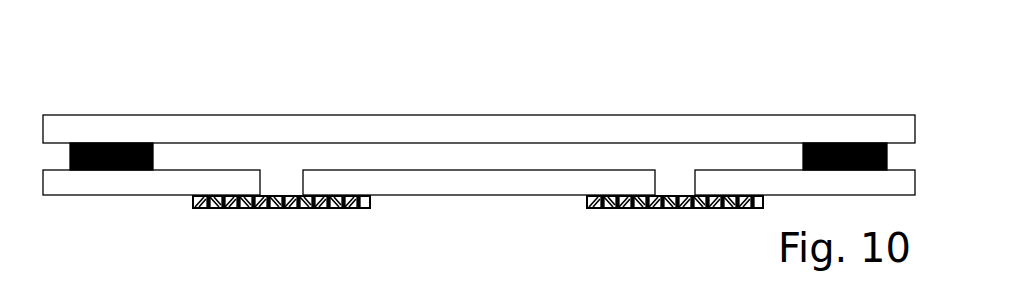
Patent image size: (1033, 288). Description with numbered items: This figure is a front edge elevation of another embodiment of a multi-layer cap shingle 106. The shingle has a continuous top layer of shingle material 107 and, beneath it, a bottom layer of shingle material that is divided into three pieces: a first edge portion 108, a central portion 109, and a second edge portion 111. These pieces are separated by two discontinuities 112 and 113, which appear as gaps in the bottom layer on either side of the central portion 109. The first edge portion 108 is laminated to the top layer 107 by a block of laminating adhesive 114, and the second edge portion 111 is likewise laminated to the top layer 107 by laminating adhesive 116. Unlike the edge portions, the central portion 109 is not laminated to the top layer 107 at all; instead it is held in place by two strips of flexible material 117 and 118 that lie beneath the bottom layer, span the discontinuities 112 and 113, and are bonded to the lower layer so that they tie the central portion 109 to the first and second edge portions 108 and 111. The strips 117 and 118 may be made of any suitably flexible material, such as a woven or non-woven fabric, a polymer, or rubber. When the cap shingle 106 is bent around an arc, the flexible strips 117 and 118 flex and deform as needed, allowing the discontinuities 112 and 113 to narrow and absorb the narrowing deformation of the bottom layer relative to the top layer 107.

The multi-layer cap shingle 106 is at (822, 92).
The top layer of shingle material 107 is at (657, 122).
The first edge portion 108 is at (775, 178).
The central portion 109 is at (492, 192).
The second edge portion 111 is at (80, 189).
The discontinuity 112 is at (677, 176).
The discontinuity 113 is at (282, 181).
The laminating adhesive 114 is at (863, 145).
The laminating adhesive 116 is at (121, 146).
The strip of flexible material 117 is at (663, 207).
The strip of flexible material 118 is at (283, 208).